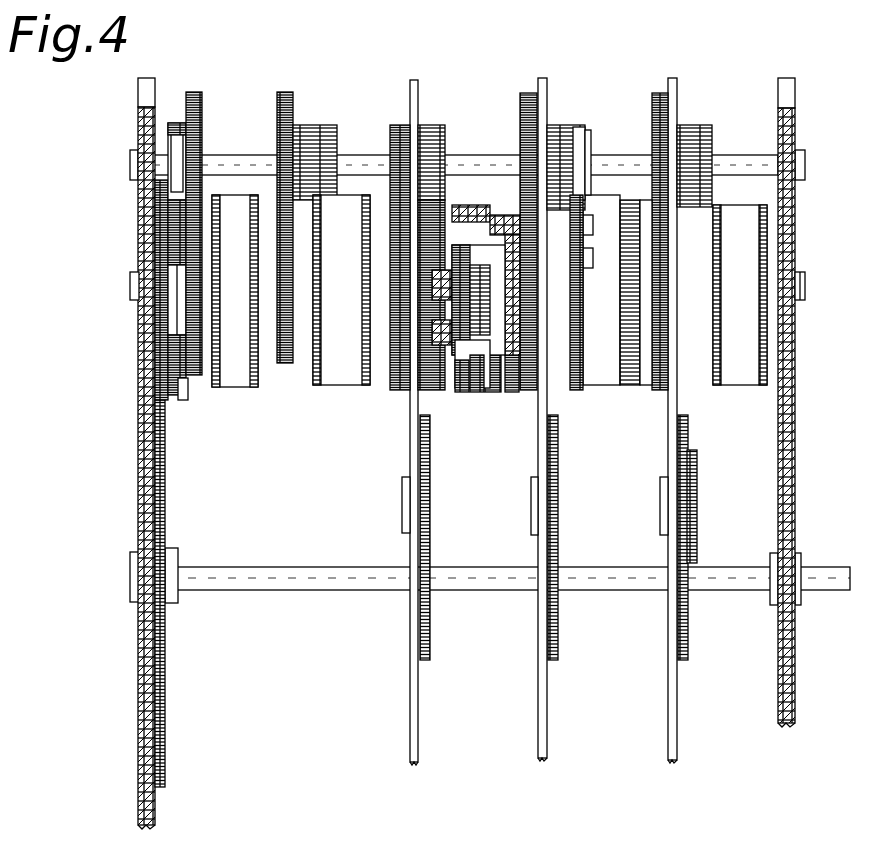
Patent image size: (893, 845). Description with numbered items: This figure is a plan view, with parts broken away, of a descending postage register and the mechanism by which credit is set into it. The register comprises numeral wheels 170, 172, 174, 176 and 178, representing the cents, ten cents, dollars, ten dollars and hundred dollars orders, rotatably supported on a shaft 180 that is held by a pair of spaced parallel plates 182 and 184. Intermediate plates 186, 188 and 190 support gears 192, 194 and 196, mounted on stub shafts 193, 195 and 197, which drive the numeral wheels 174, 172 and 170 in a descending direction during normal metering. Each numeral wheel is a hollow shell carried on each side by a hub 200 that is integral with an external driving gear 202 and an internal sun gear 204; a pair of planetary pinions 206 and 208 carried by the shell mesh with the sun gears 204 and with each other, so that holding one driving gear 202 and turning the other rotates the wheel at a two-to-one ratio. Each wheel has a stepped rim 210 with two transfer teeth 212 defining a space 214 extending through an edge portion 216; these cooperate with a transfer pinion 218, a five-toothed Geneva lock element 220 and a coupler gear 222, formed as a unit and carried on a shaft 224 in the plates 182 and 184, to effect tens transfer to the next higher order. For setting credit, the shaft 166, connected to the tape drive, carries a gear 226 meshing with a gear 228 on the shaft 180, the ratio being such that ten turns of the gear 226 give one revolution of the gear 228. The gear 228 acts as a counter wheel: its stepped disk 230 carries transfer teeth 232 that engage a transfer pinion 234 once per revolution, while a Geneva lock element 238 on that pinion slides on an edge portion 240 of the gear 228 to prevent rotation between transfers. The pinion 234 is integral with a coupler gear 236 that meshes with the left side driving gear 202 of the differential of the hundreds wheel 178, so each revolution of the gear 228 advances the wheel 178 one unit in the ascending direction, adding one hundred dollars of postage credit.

The shaft 166 is at (835, 572).
The numeral wheel 170 is at (738, 388).
The numeral wheel 172 is at (600, 388).
The numeral wheel 174 is at (470, 390).
The numeral wheel 176 is at (340, 386).
The numeral wheel 178 is at (245, 388).
The shaft 180 is at (806, 287).
The plate 182 is at (138, 505).
The plate 184 is at (796, 690).
The intermediate plate 186 is at (412, 95).
The intermediate plate 188 is at (538, 718).
The intermediate plate 190 is at (672, 95).
The gear 192 is at (430, 622).
The stub shaft 193 is at (402, 500).
The gear 194 is at (558, 622).
The stub shaft 195 is at (531, 527).
The gear 196 is at (688, 622).
The stub shaft 197 is at (660, 527).
The hub 200 is at (478, 395).
The driving gear 202 is at (175, 358).
The sun gear 204 is at (438, 245).
The planetary pinion 206 is at (463, 392).
The planetary pinion 208 is at (480, 210).
The stepped rim 210 is at (580, 145).
The transfer gear teeth 212 is at (590, 225).
The space 214 is at (590, 258).
The edge portion 216 is at (577, 392).
The transfer pinion 218 is at (555, 140).
The Geneva lock element 220 is at (588, 135).
The coupler gear 222 is at (528, 100).
The shaft 224 is at (247, 165).
The gear 226 is at (165, 690).
The gear 228 is at (158, 215).
The stepped disk 230 is at (183, 400).
The transfer teeth 232 is at (175, 245).
The transfer pinion 234 is at (181, 125).
The coupler gear 236 is at (197, 92).
The Geneva lock element 238 is at (170, 130).
The edge portion 240 is at (175, 320).